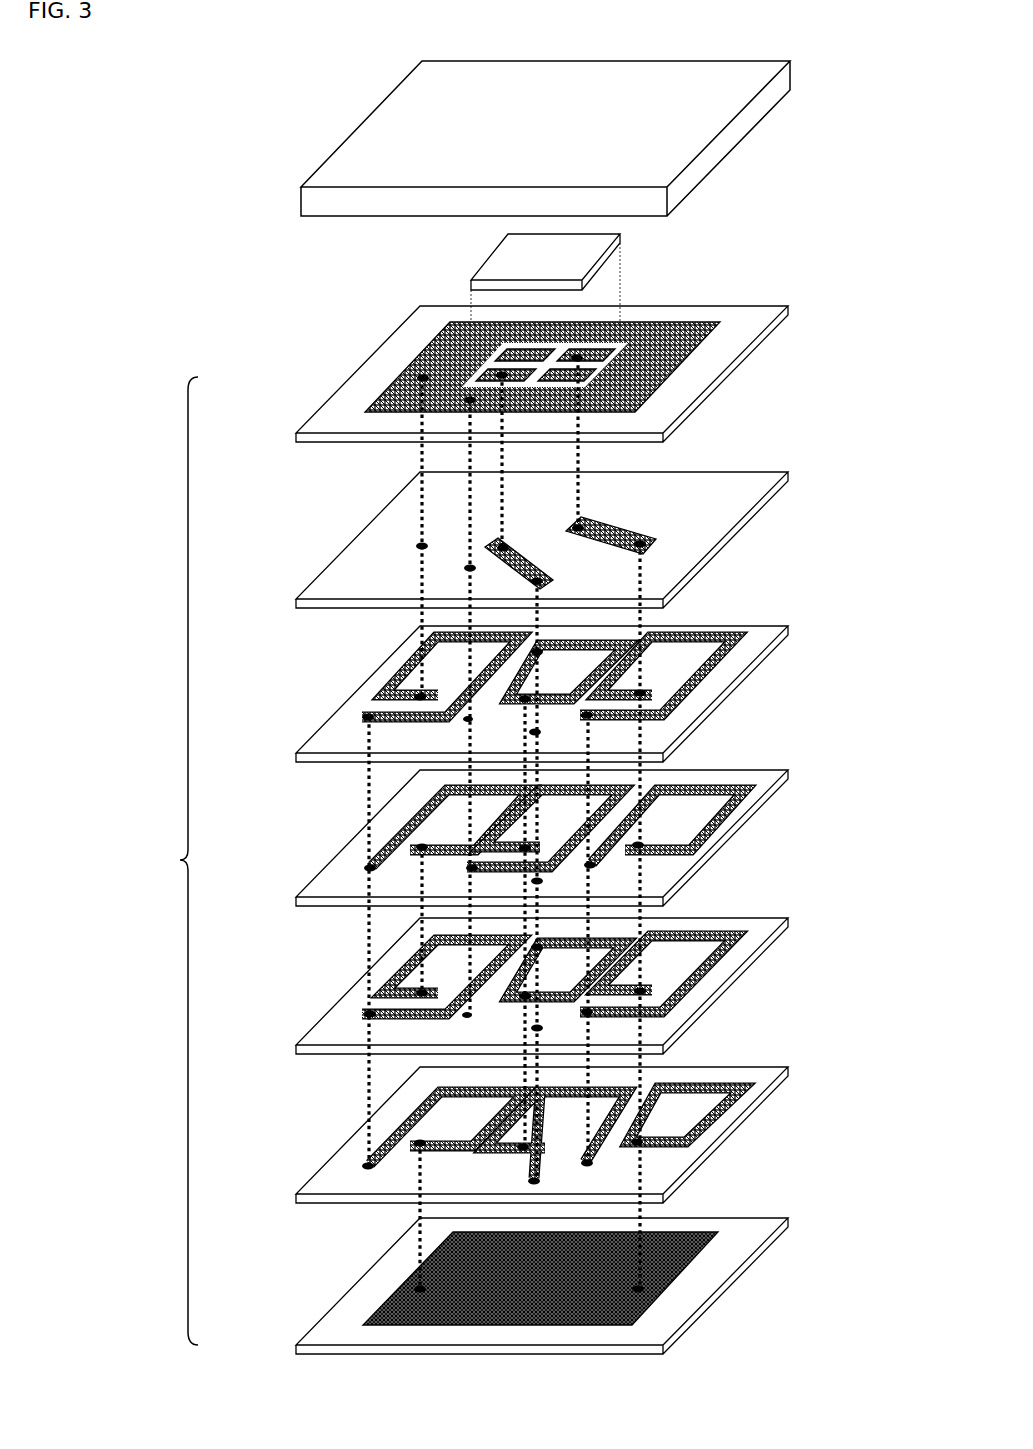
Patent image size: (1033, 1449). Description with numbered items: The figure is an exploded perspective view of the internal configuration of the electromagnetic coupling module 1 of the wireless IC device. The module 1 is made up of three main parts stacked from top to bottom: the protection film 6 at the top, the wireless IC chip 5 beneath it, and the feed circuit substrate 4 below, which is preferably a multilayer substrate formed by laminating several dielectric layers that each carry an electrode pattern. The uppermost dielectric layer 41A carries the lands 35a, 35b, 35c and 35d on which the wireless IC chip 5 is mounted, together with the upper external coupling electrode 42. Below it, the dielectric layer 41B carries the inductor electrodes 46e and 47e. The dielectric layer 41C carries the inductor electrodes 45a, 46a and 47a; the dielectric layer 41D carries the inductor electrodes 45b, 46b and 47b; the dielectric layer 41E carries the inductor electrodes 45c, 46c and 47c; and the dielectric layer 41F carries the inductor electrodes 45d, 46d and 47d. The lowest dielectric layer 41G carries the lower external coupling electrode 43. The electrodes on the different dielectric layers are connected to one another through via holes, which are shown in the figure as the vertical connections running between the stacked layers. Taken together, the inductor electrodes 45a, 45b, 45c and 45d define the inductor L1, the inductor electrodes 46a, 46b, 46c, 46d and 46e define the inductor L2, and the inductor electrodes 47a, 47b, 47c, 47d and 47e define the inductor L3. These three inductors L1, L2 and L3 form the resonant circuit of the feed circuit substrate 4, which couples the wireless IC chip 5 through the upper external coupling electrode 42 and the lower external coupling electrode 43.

The electromagnetic coupling module 1 is at (853, 44).
The feed circuit substrate 4 is at (498, 806).
The wireless IC chip 5 is at (495, 265).
The protection film 6 is at (405, 88).
The land 35a is at (485, 372).
The land 35b is at (503, 353).
The land 35c is at (570, 378).
The land 35d is at (583, 352).
The dielectric layer 41A is at (530, 350).
The dielectric layer 41B is at (330, 578).
The dielectric layer 41C is at (330, 732).
The dielectric layer 41D is at (330, 876).
The dielectric layer 41E is at (330, 1026).
The dielectric layer 41F is at (330, 1176).
The dielectric layer 41G is at (509, 1270).
The upper external coupling electrode 42 is at (750, 315).
The lower external coupling electrode 43 is at (698, 1243).
The inductor electrode 45a is at (441, 679).
The inductor electrode 45b is at (447, 831).
The inductor electrode 45c is at (441, 979).
The inductor electrode 45d is at (443, 1131).
The inductor electrode 46a is at (567, 674).
The inductor electrode 46b is at (544, 831).
The inductor electrode 46c is at (566, 971).
The inductor electrode 46d is at (556, 1138).
The inductor electrode 46e is at (517, 555).
The inductor electrode 47a is at (658, 678).
The inductor electrode 47b is at (664, 829).
The inductor electrode 47c is at (658, 976).
The inductor electrode 47d is at (685, 1117).
The inductor electrode 47e is at (623, 533).
The inductor L1 is at (446, 869).
The inductor L2 is at (547, 835).
The inductor L3 is at (655, 849).